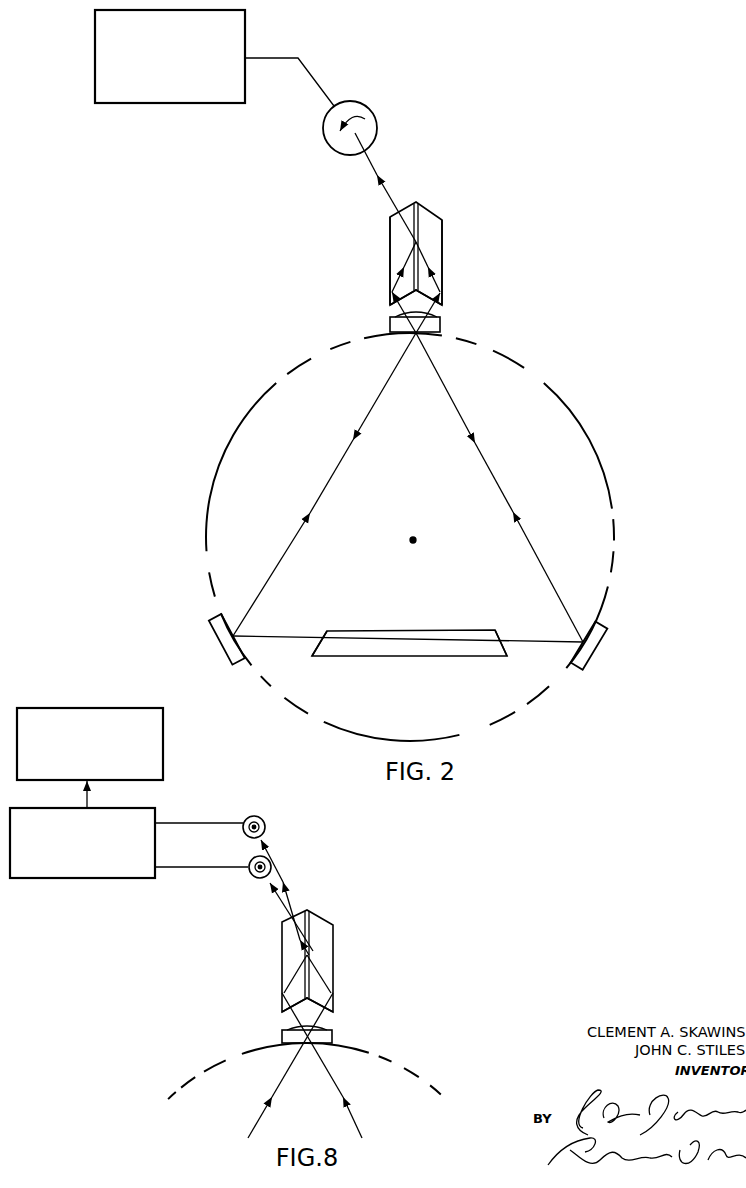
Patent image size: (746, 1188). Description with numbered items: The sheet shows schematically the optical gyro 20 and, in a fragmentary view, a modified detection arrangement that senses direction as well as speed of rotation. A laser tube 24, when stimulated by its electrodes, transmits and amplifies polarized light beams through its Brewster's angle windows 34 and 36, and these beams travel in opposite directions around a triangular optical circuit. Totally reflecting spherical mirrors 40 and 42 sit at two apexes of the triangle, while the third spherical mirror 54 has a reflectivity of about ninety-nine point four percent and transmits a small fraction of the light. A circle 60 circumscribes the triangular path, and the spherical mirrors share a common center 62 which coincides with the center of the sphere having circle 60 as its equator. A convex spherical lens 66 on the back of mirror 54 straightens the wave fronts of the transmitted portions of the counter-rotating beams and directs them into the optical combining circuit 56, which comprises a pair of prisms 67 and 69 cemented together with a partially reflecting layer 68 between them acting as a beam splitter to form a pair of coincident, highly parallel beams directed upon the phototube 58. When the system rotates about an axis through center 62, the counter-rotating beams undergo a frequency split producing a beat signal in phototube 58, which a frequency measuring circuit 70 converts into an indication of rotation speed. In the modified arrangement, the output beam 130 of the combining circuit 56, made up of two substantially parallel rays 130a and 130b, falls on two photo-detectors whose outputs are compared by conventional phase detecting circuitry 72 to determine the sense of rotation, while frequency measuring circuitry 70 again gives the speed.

In FIG. 2, the gyro 20 is at (262, 383).
In FIG. 2, the laser tube 24 is at (412, 631).
In FIG. 2, the Brewster's angle window 34 is at (500, 637).
In FIG. 2, the Brewster's angle window 36 is at (324, 636).
In FIG. 2, the totally reflecting spherical mirror 40 is at (598, 653).
In FIG. 2, the totally reflecting spherical mirror 42 is at (224, 646).
In FIG. 2, the third spherical mirror 54 is at (390, 321).
In FIG. 8, the third spherical mirror 54 is at (282, 1035).
In FIG. 2, the optical combining circuit 56 is at (384, 264).
In FIG. 8, the optical combining circuit 56 is at (336, 976).
In FIG. 2, the phototube 58 is at (373, 111).
In FIG. 2, the circle 60 is at (577, 418).
In FIG. 8, the circle 60 is at (383, 1060).
In FIG. 2, the common center 62 is at (416, 537).
In FIG. 2, the convex spherical lens 66 is at (418, 306).
In FIG. 8, the convex spherical lens 66 is at (315, 1022).
In FIG. 2, the prism 67 is at (390, 242).
In FIG. 2, the partially reflecting layer 68 is at (416, 242).
In FIG. 2, the prism 69 is at (442, 236).
In FIG. 2, the frequency measuring circuit 70 is at (165, 103).
In FIG. 8, the frequency measuring circuit 70 is at (163, 737).
In FIG. 8, the phase detecting circuitry 72 is at (155, 811).
In FIG. 8, the output beam 130 is at (290, 897).
In FIG. 8, the ray 130a is at (297, 933).
In FIG. 8, the ray 130b is at (267, 852).